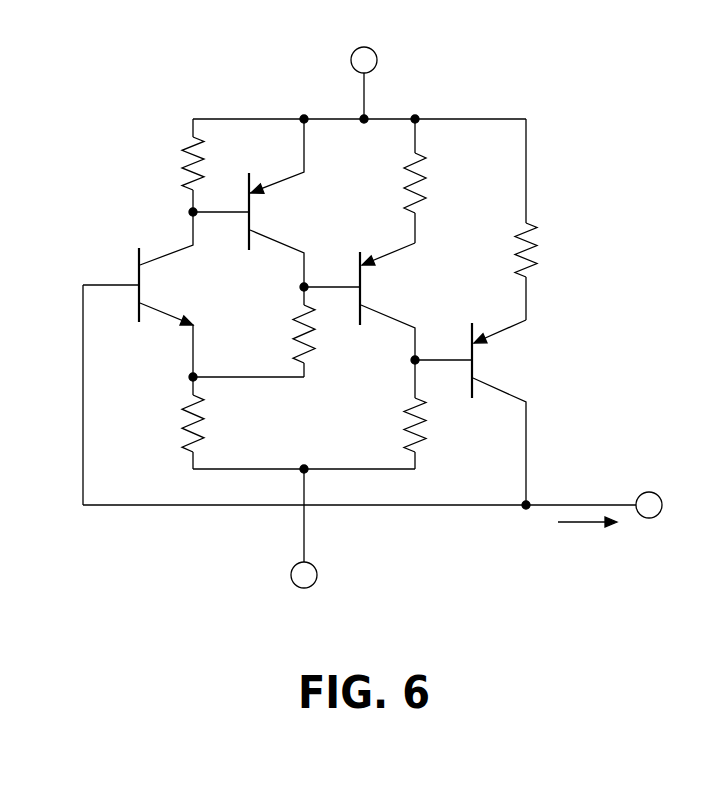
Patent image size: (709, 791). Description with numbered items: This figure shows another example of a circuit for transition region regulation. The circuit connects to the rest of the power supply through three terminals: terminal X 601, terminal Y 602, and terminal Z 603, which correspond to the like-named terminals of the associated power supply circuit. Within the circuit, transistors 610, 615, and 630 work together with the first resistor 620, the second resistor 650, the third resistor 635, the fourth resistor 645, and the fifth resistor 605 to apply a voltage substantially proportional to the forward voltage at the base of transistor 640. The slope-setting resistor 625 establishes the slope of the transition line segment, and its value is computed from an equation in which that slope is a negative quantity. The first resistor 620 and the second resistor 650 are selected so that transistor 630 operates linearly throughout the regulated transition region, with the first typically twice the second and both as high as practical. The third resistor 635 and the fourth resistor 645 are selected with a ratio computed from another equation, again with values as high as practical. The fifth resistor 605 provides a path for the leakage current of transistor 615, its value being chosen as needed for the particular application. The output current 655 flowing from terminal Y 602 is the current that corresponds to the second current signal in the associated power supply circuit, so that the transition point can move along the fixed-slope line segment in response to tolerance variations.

The terminal X 601 is at (348, 68).
The terminal Y 602 is at (645, 480).
The terminal Z 603 is at (277, 577).
The resistor R5 605 is at (182, 147).
The transistor 610 is at (157, 247).
The transistor 615 is at (266, 217).
The resistor R1 620 is at (430, 188).
The resistor RY 625 is at (542, 248).
The transistor 630 is at (380, 287).
The resistor R3 635 is at (292, 318).
The transistor 640 is at (493, 358).
The resistor R4 645 is at (177, 418).
The resistor R2 650 is at (433, 425).
The current IY 655 is at (577, 532).